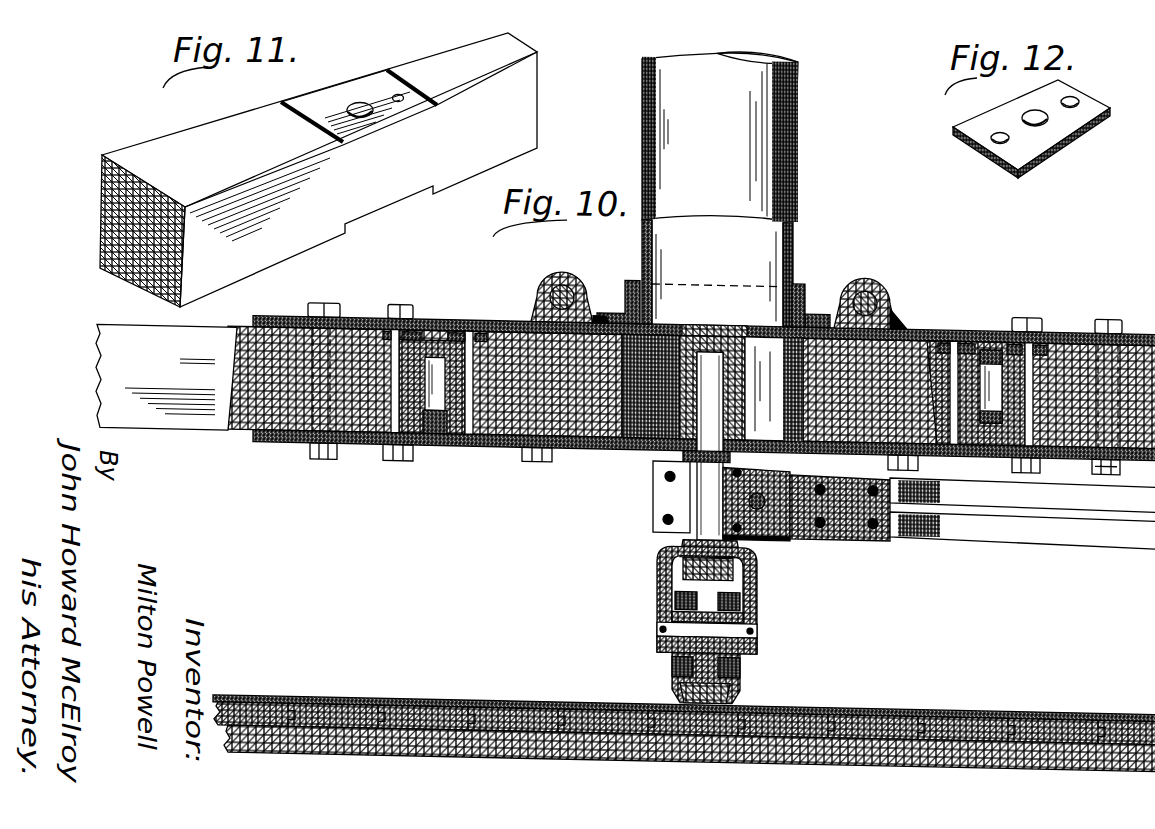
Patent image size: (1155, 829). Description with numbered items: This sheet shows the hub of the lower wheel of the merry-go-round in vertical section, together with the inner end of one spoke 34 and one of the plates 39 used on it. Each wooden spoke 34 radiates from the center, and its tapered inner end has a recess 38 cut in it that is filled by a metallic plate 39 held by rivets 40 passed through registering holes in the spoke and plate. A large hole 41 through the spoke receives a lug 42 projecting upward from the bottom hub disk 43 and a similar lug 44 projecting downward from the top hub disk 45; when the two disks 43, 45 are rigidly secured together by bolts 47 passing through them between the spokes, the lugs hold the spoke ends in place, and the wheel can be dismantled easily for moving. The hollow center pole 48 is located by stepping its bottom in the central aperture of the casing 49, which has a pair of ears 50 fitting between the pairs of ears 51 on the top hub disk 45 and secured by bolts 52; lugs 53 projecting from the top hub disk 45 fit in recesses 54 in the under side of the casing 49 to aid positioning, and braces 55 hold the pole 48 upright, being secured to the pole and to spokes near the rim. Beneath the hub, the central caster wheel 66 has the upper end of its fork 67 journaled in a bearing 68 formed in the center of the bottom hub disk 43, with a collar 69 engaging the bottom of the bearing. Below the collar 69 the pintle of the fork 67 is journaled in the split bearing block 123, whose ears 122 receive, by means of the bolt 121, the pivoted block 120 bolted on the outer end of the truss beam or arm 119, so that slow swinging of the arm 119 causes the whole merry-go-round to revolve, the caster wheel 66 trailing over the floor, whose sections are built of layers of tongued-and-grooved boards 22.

In FIG. 10, the tongued-and-grooved boards 22 is at (1125, 761).
In FIG. 11, the spoke 34 is at (147, 141).
In FIG. 11, the recess 38 is at (366, 92).
In FIG. 10, the recess 38 is at (372, 327).
In FIG. 12, the metallic plate 39 is at (953, 127).
In FIG. 10, the metallic plate 39 is at (476, 341).
In FIG. 10, the rivet 40 is at (400, 338).
In FIG. 11, the large hole 41 is at (350, 104).
In FIG. 10, the large hole 41 is at (468, 340).
In FIG. 10, the lug 42 is at (440, 451).
In FIG. 10, the bottom hub disk 43 is at (600, 454).
In FIG. 10, the lug 44 is at (440, 370).
In FIG. 10, the top hub disk 45 is at (300, 311).
In FIG. 10, the bolt 47 is at (310, 465).
In FIG. 10, the hollow center pole 48 is at (655, 49).
In FIG. 10, the casing 49 is at (798, 288).
In FIG. 10, the ear 50 is at (548, 287).
In FIG. 10, the ear 51 is at (530, 304).
In FIG. 10, the bolt 52 is at (565, 291).
In FIG. 10, the lug 53 is at (667, 323).
In FIG. 10, the recess 54 is at (608, 315).
In FIG. 10, the brace 55 is at (800, 335).
In FIG. 10, the central wheel 66 is at (672, 685).
In FIG. 10, the fork 67 is at (785, 366).
In FIG. 10, the bearing 68 is at (713, 410).
In FIG. 10, the collar 69 is at (690, 467).
In FIG. 10, the truss beam 119 is at (1082, 539).
In FIG. 10, the block 120 is at (880, 541).
In FIG. 10, the bolt 121 is at (757, 509).
In FIG. 10, the ear 122 is at (735, 514).
In FIG. 10, the split bearing block 123 is at (652, 536).